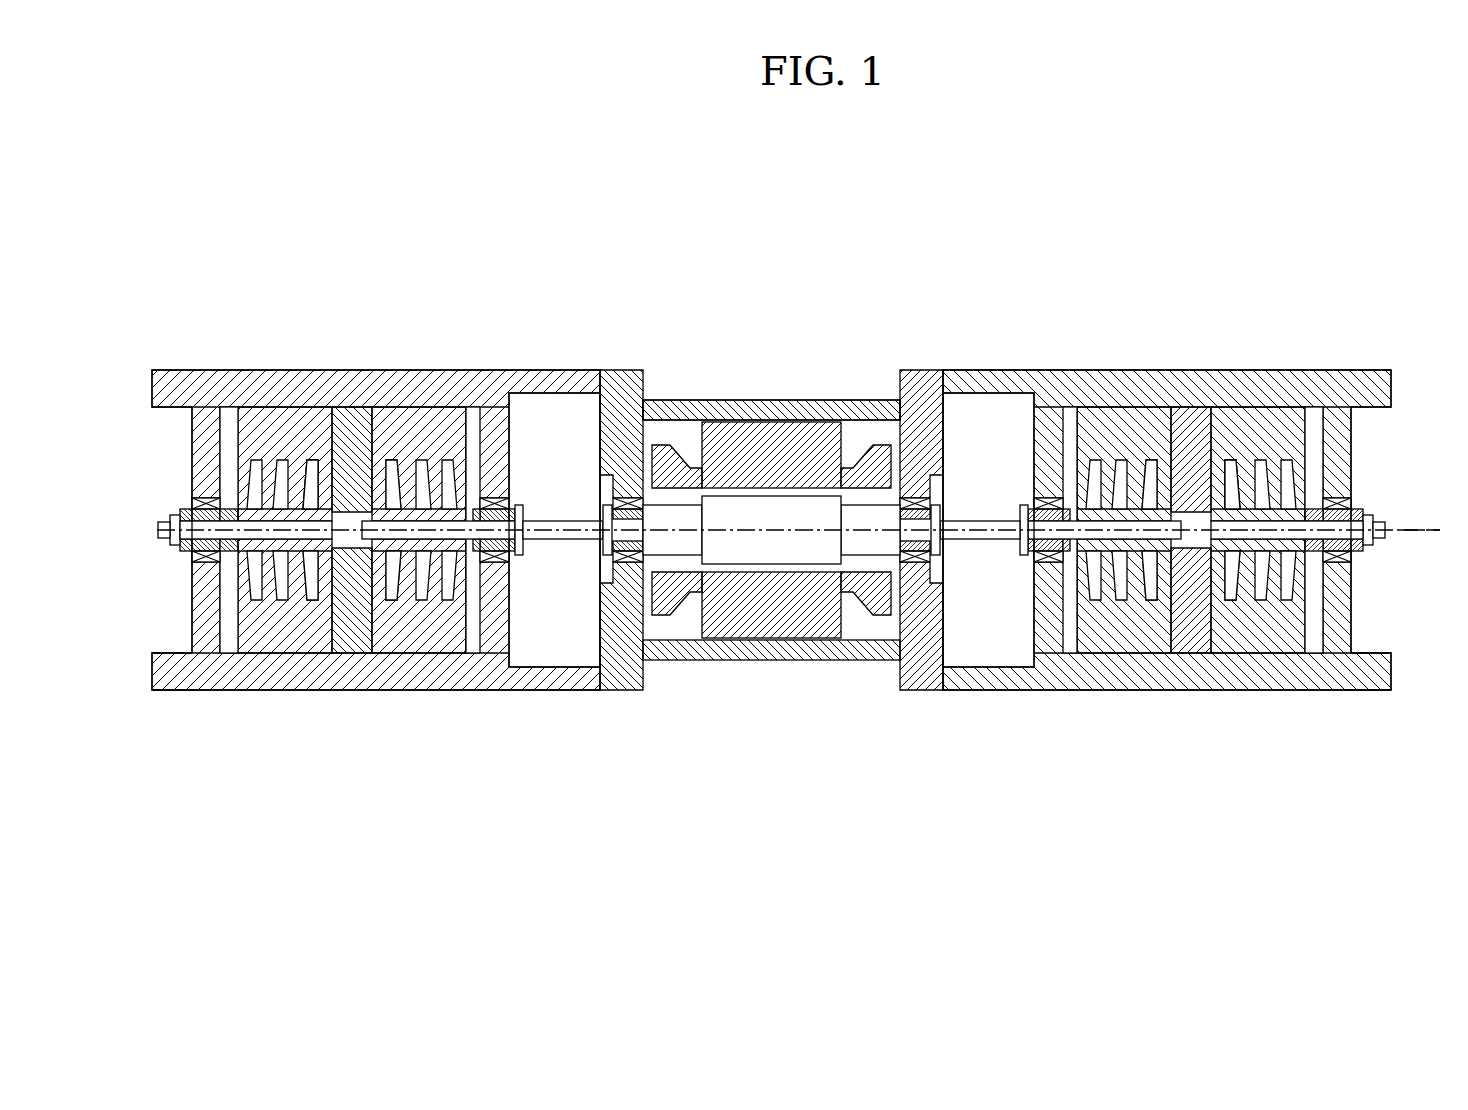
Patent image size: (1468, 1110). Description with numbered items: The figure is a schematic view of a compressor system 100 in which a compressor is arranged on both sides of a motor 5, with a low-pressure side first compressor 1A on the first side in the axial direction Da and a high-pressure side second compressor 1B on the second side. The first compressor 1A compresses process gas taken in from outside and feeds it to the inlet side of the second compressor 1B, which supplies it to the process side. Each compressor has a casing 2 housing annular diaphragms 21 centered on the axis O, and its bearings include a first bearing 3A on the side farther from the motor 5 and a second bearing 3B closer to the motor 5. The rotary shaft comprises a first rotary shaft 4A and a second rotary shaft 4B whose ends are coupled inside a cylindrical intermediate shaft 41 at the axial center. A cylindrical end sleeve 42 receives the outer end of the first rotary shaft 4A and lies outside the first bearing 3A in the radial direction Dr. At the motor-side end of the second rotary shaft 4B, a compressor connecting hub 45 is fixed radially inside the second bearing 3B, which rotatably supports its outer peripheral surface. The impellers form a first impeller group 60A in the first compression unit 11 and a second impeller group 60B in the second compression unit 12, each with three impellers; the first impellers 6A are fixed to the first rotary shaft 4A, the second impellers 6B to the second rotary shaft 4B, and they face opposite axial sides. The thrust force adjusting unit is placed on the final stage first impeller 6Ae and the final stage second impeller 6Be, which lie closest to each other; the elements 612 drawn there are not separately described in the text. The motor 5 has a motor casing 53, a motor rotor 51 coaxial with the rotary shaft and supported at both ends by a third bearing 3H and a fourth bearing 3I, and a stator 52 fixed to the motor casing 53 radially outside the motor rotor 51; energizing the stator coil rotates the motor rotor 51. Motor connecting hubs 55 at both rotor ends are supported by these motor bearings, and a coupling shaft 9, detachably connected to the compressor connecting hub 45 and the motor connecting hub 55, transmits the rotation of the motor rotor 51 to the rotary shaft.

The compressor system 100 is at (787, 266).
The first compressor 1A is at (405, 370).
The second compressor 1B is at (1167, 442).
The casing 2 is at (258, 367).
The first bearing 3A is at (180, 553).
The second bearing 3B is at (514, 566).
The third bearing 3H is at (612, 560).
The fourth bearing 3I is at (925, 639).
The first rotary shaft 4A is at (322, 435).
The second rotary shaft 4B is at (430, 435).
The motor 5 is at (745, 400).
The first impeller 6A is at (300, 600).
The second impeller 6B is at (453, 606).
The final stage first impeller 6Ae is at (336, 458).
The final stage second impeller 6Be is at (388, 460).
The coupling shaft 9 is at (550, 541).
The first compression unit 11 is at (283, 457).
The second compression unit 12 is at (449, 457).
The diaphragm 21 is at (303, 460).
The intermediate shaft 41 is at (350, 653).
The end sleeve 42 is at (175, 652).
The compressor connecting hub 45 is at (530, 430).
The motor rotor 51 is at (766, 564).
The stator 52 is at (808, 638).
The motor casing 53 is at (817, 422).
The motor connecting hub 55 is at (600, 430).
The first impeller group 60A is at (230, 653).
The second impeller group 60B is at (473, 653).
The blade 612 is at (312, 600).
The radial direction Dr is at (122, 468).
The axial direction Da is at (835, 881).
The axis O is at (1412, 530).